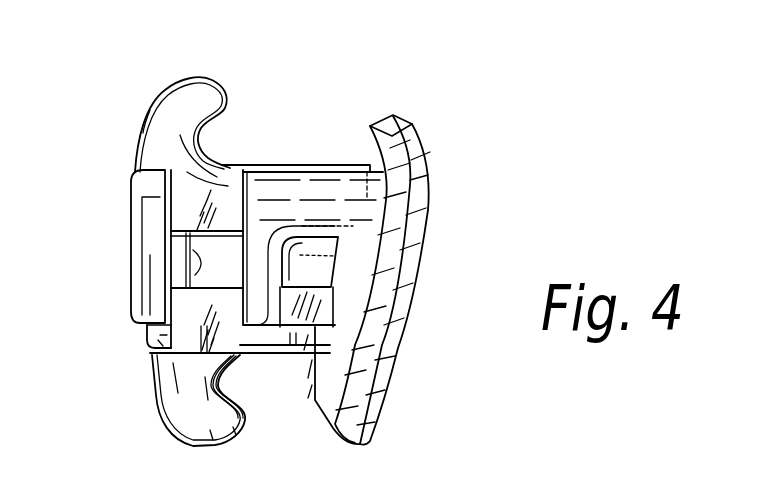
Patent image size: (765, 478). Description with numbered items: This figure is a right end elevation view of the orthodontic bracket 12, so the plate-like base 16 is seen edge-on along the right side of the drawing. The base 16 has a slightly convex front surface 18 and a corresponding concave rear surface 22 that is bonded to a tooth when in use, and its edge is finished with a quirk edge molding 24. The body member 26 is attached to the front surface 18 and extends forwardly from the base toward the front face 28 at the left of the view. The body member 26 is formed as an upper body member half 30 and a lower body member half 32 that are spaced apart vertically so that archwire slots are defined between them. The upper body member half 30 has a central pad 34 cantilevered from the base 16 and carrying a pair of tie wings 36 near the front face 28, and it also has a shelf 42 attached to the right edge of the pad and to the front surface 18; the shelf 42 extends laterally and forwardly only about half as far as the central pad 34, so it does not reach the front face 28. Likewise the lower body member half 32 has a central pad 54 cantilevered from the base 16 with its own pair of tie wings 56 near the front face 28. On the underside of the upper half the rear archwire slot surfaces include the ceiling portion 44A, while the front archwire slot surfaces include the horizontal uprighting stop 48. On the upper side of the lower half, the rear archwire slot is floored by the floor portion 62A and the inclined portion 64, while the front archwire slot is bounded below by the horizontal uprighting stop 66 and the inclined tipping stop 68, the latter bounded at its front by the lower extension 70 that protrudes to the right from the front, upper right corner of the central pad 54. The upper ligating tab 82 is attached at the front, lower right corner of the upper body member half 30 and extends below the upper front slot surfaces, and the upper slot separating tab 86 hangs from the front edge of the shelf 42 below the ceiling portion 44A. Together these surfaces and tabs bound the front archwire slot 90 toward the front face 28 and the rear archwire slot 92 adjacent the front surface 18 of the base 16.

The bracket 12 is at (138, 78).
The base 16 is at (410, 125).
The front surface 18 is at (353, 262).
The rear surface 22 is at (400, 307).
The quirk edge molding 24 is at (386, 343).
The body member 26 is at (313, 163).
The front face 28 is at (130, 190).
The upper body member half 30 is at (226, 173).
The lower body member half 32 is at (230, 346).
The central pad 34 is at (234, 211).
The tie wings 36 is at (210, 78).
The shelf 42 is at (345, 165).
The ceiling portion 44A is at (392, 247).
The horizontal uprighting stop 48 is at (200, 245).
The central pad 54 is at (283, 355).
The tie wings 56 is at (213, 437).
The floor portion 62A is at (300, 282).
The inclined portion 64 is at (330, 323).
The horizontal uprighting stop 66 is at (192, 281).
The inclined tipping stop 68 is at (143, 328).
The lower extension 70 is at (147, 340).
The upper ligating tab 82 is at (147, 328).
The upper slot separating tab 86 is at (300, 346).
The front archwire slot 90 is at (206, 260).
The rear archwire slot 92 is at (335, 266).